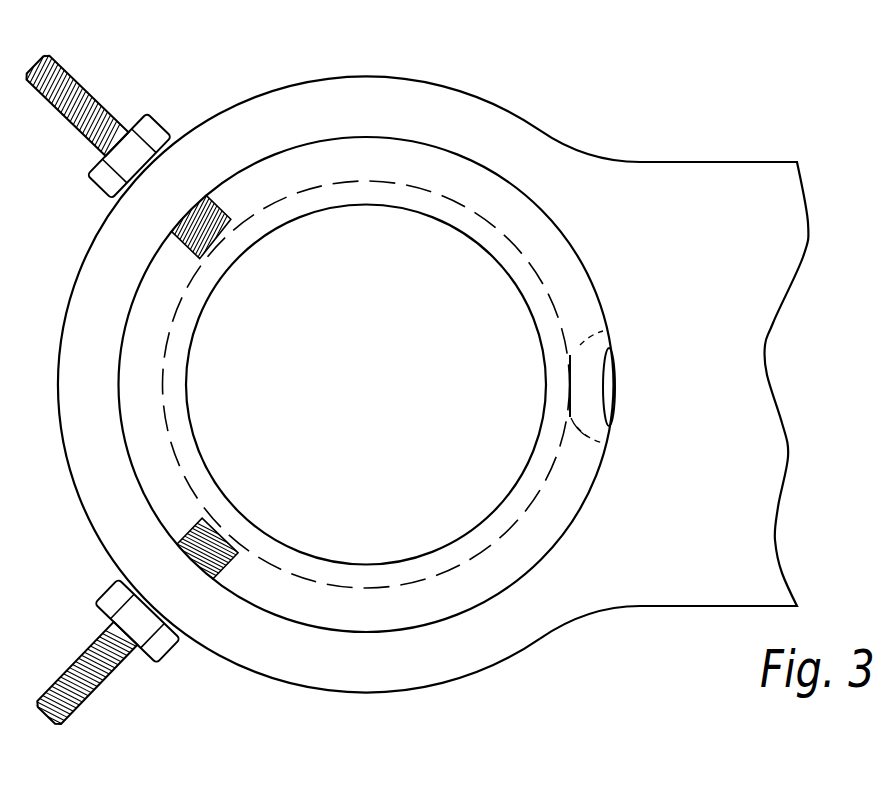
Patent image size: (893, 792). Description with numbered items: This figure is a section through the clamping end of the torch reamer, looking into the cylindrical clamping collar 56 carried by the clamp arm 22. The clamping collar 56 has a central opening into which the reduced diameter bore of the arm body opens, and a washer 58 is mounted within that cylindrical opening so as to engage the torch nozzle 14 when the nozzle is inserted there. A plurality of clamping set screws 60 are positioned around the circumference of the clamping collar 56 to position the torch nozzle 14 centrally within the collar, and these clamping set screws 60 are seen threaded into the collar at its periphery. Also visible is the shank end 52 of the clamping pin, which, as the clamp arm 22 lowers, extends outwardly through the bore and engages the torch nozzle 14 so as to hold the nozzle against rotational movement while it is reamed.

The torch nozzle 14 is at (548, 256).
The clamp arm 22 is at (617, 160).
The shank end 52 is at (603, 388).
The clamping collar 56 is at (378, 78).
The washer 58 is at (192, 338).
The bolt 60 is at (90, 82).